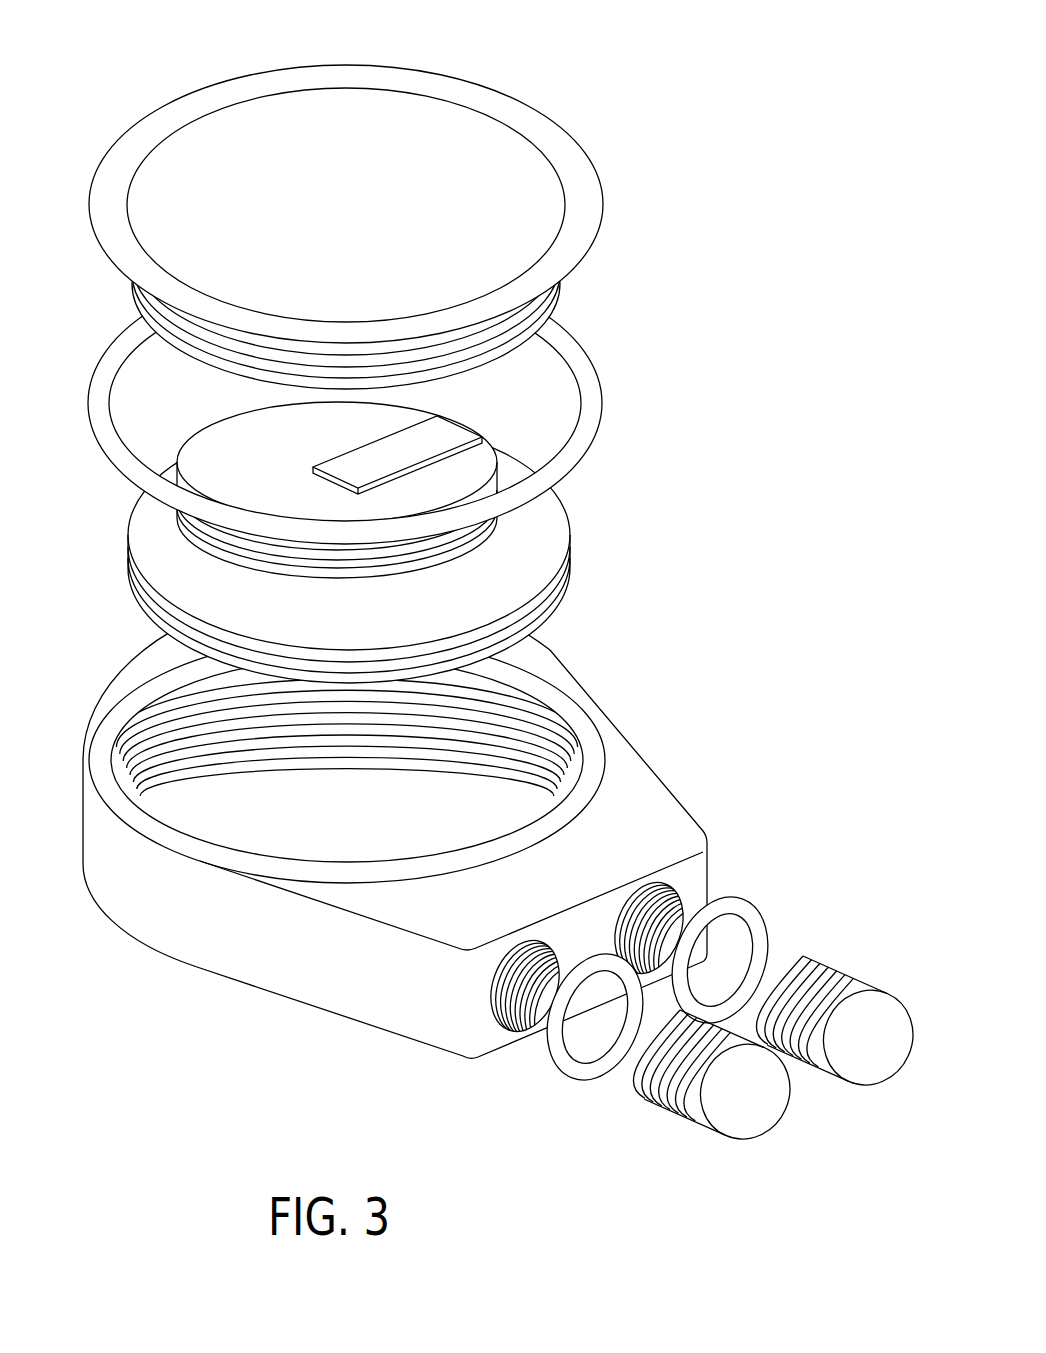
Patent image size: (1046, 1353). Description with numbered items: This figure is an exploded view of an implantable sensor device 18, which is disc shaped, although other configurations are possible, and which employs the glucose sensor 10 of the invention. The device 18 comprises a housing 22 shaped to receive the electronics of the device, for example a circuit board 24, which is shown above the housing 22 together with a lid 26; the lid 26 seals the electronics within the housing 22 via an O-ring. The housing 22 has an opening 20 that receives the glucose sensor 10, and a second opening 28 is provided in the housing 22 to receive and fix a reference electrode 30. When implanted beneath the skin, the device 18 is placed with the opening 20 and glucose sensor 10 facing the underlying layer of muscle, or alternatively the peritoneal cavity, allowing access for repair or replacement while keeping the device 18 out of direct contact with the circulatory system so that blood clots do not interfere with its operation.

The glucose sensor 10 is at (857, 985).
The implantable sensor device 18 is at (727, 200).
The opening 20 is at (705, 878).
The housing 22 is at (641, 776).
The circuit board 24 is at (570, 589).
The lid 26 is at (510, 138).
The second opening 28 is at (532, 1013).
The reference electrode 30 is at (683, 1107).